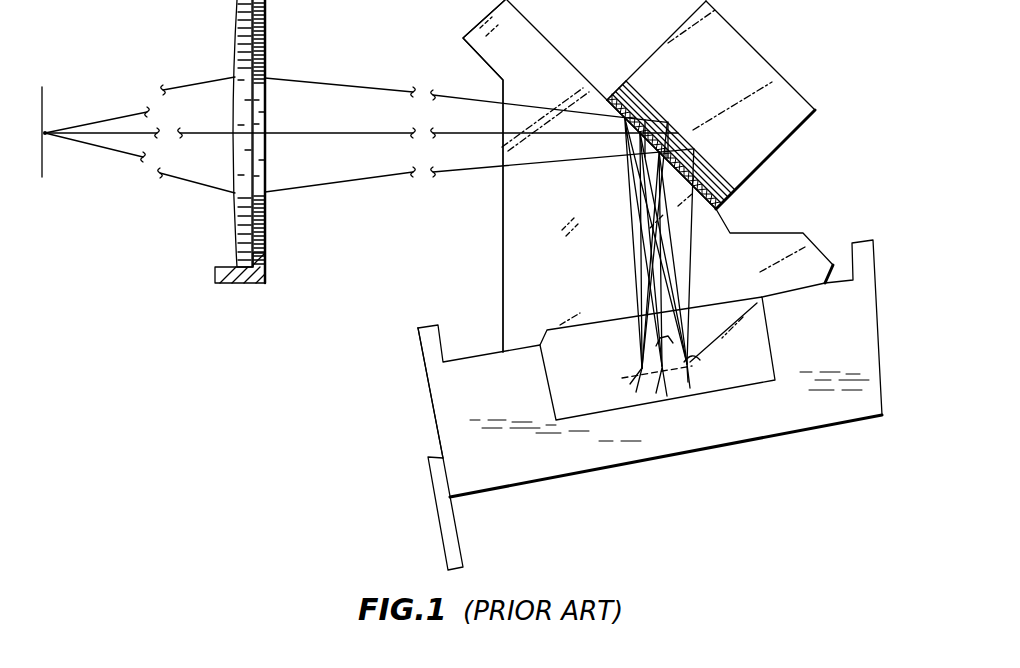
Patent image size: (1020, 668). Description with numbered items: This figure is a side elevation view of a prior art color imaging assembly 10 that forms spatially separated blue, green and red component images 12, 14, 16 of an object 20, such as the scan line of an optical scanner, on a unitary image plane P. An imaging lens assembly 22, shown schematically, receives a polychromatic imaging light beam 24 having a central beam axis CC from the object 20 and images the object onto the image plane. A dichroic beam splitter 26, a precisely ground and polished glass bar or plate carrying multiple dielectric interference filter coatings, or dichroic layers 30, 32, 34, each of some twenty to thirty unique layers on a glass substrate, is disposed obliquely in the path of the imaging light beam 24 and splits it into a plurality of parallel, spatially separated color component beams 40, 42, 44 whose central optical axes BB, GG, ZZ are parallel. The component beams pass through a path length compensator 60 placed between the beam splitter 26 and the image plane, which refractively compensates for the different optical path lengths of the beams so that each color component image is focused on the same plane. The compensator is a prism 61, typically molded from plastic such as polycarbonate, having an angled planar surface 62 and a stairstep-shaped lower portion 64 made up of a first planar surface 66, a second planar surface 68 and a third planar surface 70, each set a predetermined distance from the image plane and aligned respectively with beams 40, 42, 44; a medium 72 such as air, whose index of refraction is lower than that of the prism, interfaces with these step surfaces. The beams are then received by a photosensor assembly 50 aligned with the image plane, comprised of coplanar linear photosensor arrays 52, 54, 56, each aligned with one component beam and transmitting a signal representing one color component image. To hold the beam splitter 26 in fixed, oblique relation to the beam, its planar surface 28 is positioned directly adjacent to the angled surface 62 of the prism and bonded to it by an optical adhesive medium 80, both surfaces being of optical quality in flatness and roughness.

The color imaging assembly 10 is at (368, 318).
The blue color component image 12 is at (643, 373).
The green color component image 14 is at (690, 326).
The red color component image 16 is at (690, 352).
The object 20 is at (44, 110).
The imaging lens assembly 22 is at (281, 28).
The polychromatic imaging light beam 24 is at (304, 91).
The dichroic beam splitter 26 is at (763, 67).
The planar surface 28 is at (713, 216).
The dichroic layer 30 is at (618, 93).
The dichroic layer 32 is at (631, 88).
The dichroic layer 34 is at (660, 103).
The color component beam 40 is at (617, 249).
The color component beam 42 is at (657, 253).
The color component beam 44 is at (693, 270).
The photosensor assembly 50 is at (685, 414).
The linear photosensor array 52 is at (630, 384).
The linear photosensor array 54 is at (656, 393).
The linear photosensor array 56 is at (688, 382).
The path length compensator 60 is at (483, 241).
The prism 61 is at (484, 176).
The angled planar surface 62 is at (732, 233).
The stairstep-shaped lower portion 64 is at (750, 333).
The first planar surface 66 is at (640, 312).
The second planar surface 68 is at (670, 340).
The third planar surface 70 is at (690, 364).
The medium 72 is at (546, 377).
The optical adhesive medium 80 is at (611, 101).
The central beam axis CC is at (317, 133).
The central optical axis BB is at (641, 189).
The central optical axis GG is at (655, 222).
The ray axis ZZ is at (688, 260).
The unitary image plane P is at (627, 381).